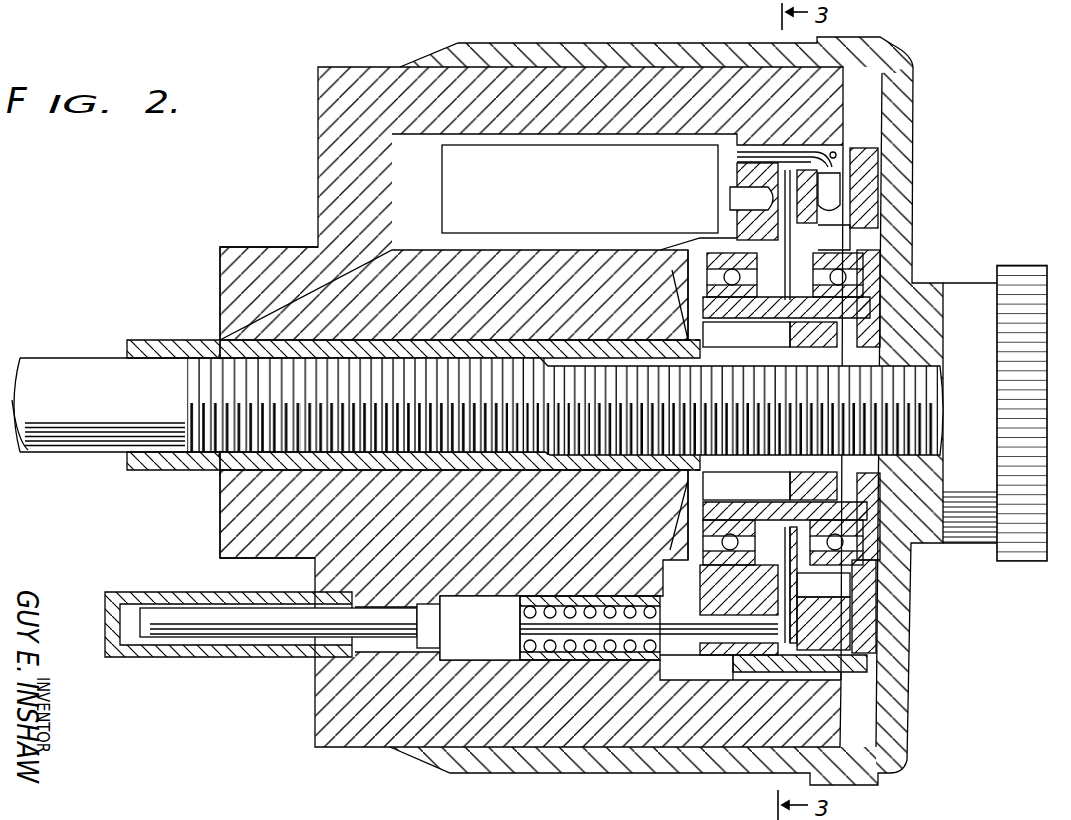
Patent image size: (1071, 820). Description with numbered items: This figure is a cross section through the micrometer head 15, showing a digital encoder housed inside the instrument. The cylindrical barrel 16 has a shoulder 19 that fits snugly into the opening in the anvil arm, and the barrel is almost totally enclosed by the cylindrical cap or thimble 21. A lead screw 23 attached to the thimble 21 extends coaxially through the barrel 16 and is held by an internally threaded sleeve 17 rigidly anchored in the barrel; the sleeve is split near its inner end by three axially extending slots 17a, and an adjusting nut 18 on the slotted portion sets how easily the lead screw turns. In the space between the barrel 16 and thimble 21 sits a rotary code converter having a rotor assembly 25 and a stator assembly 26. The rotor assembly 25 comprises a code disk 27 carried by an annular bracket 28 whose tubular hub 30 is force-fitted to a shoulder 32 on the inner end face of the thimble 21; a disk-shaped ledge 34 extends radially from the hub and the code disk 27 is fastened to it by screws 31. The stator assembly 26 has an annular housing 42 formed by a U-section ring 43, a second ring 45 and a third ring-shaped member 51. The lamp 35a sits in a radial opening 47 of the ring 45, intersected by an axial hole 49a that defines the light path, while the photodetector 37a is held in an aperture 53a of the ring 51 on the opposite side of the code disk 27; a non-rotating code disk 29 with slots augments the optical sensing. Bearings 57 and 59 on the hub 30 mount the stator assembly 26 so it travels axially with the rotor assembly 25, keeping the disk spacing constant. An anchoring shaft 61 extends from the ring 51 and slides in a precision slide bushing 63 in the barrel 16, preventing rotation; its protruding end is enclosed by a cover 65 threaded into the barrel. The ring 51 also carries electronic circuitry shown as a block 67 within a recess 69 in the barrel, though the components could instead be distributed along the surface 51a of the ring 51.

The micrometer head 15 is at (345, 765).
The cylindrical barrel 16 is at (345, 67).
The internally threaded sleeve 17 is at (167, 316).
The axially extending slots 17a is at (588, 340).
The adjusting nut 18 is at (790, 488).
The shoulder 19 is at (252, 247).
The thimble 21 is at (572, 43).
The lead screw 23 is at (72, 334).
The rotor assembly 25 is at (772, 322).
The stator assembly 26 is at (893, 157).
The code disk 27 is at (787, 645).
The annular bracket 28 is at (860, 512).
The non-rotating code disk 29 is at (790, 588).
The tubular hub 30 is at (746, 487).
The screws 31 is at (786, 244).
The shoulder 32 is at (905, 316).
The disk-shaped ledge 34 is at (760, 588).
The lamp 35a is at (850, 218).
The photodetector 37a is at (730, 213).
The annular housing 42 is at (725, 662).
The ring 43 is at (862, 680).
The second ring 45 is at (858, 230).
The openings 47 is at (850, 190).
The axially extending hole 49a is at (850, 203).
The third ring-shaped member 51 is at (700, 570).
The surface of the ring 51a is at (700, 545).
The aperture 53a is at (747, 187).
The bearing 57 is at (868, 268).
The bearing 59 is at (708, 268).
The anchoring shaft 61 is at (228, 607).
The precision slide bushing 63 is at (527, 604).
The cover 65 is at (160, 592).
The electronic circuitry block 67 is at (571, 200).
The recess 69 is at (490, 135).